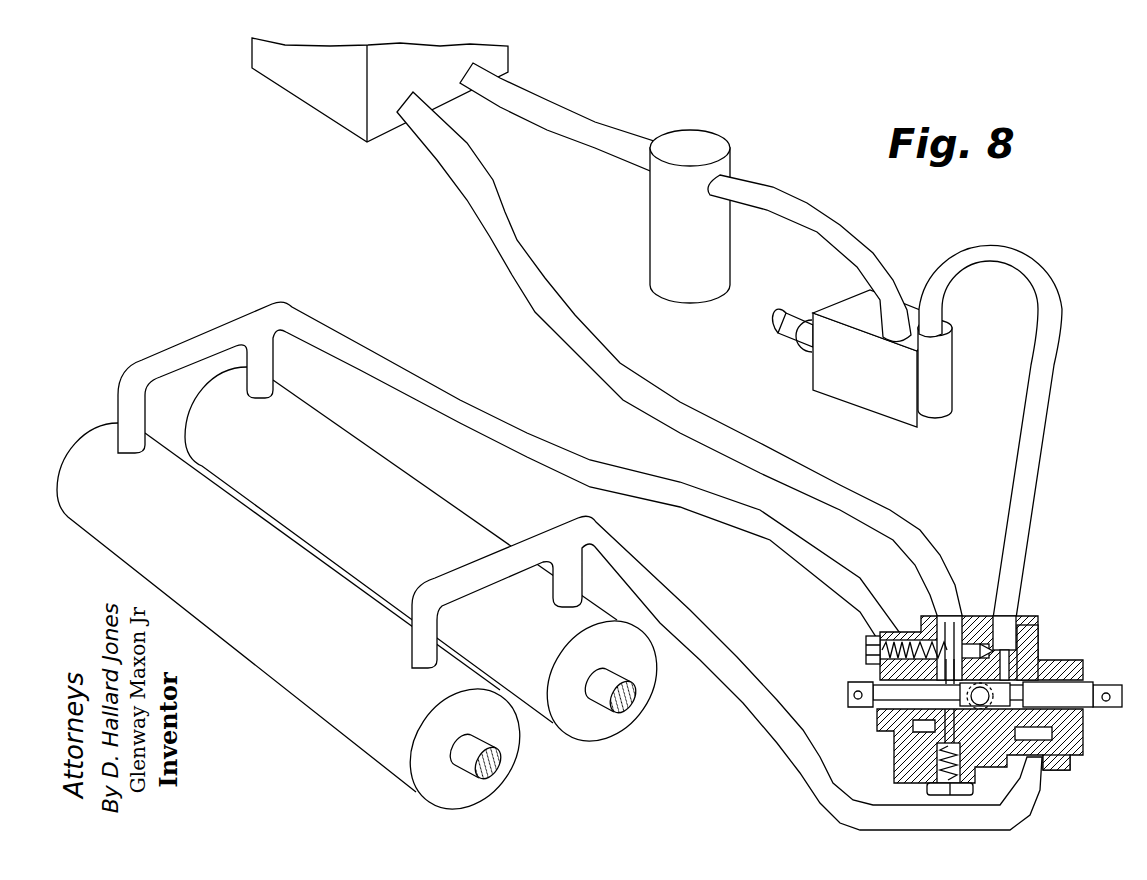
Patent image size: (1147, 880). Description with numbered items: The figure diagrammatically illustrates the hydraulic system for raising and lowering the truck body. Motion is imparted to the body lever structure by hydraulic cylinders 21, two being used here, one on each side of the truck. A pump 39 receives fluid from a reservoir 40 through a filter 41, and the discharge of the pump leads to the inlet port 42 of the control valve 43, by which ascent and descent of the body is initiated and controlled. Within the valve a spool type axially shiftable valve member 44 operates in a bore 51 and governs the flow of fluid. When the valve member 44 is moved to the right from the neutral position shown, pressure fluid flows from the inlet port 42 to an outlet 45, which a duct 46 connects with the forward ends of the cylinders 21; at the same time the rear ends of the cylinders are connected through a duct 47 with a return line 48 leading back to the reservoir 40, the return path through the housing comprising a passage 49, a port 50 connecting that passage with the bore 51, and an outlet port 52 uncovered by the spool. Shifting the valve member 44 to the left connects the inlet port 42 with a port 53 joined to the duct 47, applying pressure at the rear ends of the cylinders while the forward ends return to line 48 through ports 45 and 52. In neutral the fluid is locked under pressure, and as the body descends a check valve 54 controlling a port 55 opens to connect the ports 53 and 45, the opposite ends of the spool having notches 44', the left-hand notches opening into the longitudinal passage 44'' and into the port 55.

The hydraulic cylinders 21 is at (267, 557).
The pump 39 is at (948, 375).
The reservoir 40 is at (451, 100).
The filter 41 is at (657, 222).
The inlet port 42 is at (1022, 636).
The control valve 43 is at (1030, 662).
The valve member 44 is at (997, 683).
The notches 44' is at (1026, 696).
The longitudinal passage 44'' is at (972, 631).
The outlet 45 is at (980, 708).
The duct 46 is at (714, 510).
The duct 47 is at (1037, 806).
The return line 48 is at (889, 509).
The passage 49 is at (922, 740).
The port 50 is at (897, 714).
The bore 51 is at (880, 686).
The outlet port 52 is at (938, 617).
The port 53 is at (1065, 756).
The check valve 54 is at (934, 777).
The port 55 is at (928, 760).